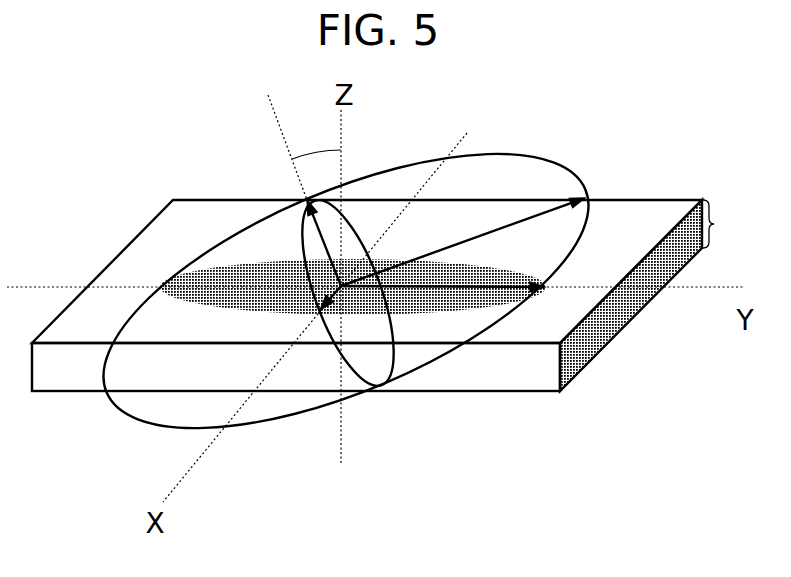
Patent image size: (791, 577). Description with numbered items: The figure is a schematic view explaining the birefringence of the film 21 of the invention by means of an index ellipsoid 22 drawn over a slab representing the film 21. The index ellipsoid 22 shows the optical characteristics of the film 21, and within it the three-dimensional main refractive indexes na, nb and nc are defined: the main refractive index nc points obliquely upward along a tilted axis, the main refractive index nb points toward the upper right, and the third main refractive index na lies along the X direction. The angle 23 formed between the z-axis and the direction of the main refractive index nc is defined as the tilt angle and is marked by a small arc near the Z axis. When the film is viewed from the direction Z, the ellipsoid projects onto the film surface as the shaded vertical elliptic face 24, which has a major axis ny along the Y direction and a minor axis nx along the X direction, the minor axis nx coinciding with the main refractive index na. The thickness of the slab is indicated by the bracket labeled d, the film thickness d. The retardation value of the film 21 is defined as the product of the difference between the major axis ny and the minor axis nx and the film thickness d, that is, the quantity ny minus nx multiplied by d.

The film 21 is at (540, 391).
The index ellipsoid 22 is at (547, 163).
The angle 23 is at (292, 160).
The vertical elliptic face 24 is at (170, 277).
The main refractive index nc is at (307, 200).
The main refractive index nb is at (585, 198).
The major axis ny is at (545, 288).
The minor axis nx is at (322, 310).
The film thickness d is at (721, 224).